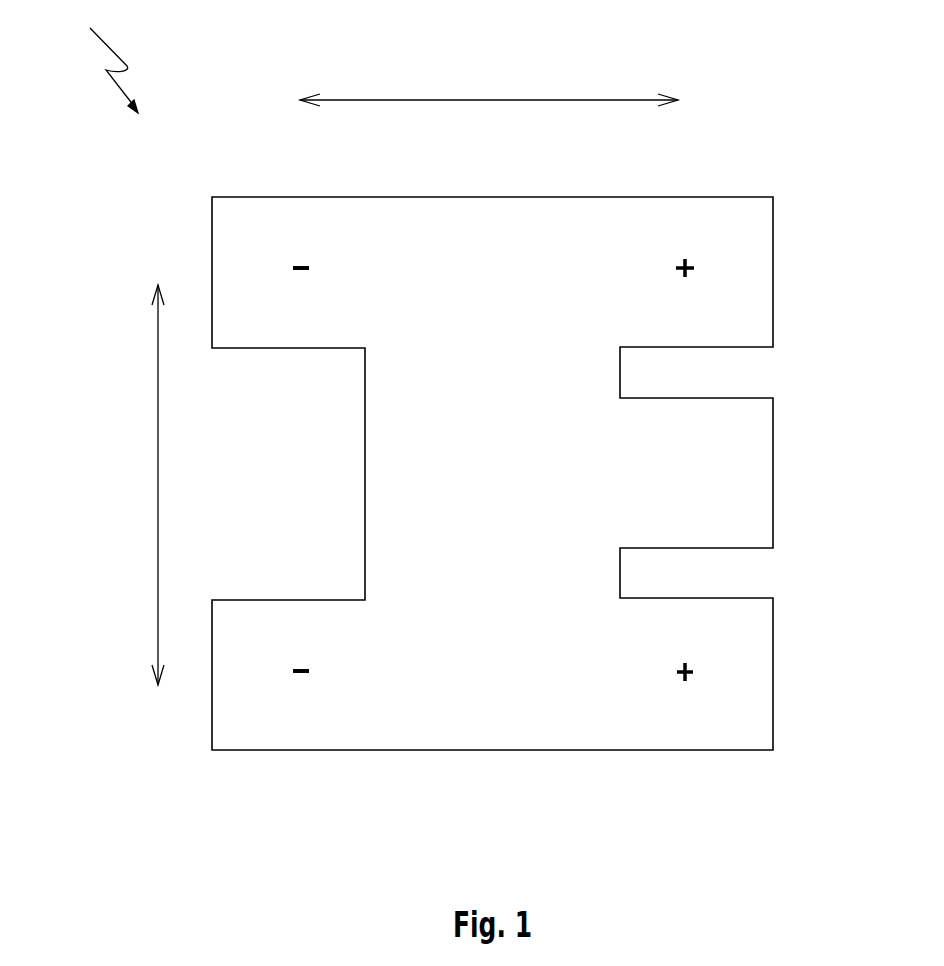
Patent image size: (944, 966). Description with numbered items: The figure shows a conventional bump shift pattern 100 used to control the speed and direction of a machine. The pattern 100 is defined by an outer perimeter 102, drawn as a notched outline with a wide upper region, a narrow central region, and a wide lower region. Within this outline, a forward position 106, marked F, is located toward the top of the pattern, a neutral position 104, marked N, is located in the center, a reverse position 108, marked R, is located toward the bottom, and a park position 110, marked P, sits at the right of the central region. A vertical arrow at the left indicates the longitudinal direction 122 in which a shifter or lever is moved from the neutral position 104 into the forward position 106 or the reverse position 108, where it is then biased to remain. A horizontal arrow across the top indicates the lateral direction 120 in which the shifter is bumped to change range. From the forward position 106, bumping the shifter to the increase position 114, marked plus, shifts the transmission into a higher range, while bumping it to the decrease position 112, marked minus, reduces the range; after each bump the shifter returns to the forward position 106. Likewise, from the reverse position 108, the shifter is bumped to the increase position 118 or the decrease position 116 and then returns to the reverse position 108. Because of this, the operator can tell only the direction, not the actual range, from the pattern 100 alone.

The bump shift pattern 100 is at (100, 56).
The housing body 102 is at (605, 751).
The neutral position 104 is at (480, 468).
The forward position 106 is at (490, 256).
The reverse position 108 is at (487, 686).
The park position 110 is at (693, 460).
The decrease position 112 is at (300, 262).
The increase position 114 is at (685, 258).
The decrease position 116 is at (305, 676).
The increase position 118 is at (683, 686).
The lateral direction 120 is at (487, 100).
The longitudinal direction 122 is at (158, 487).